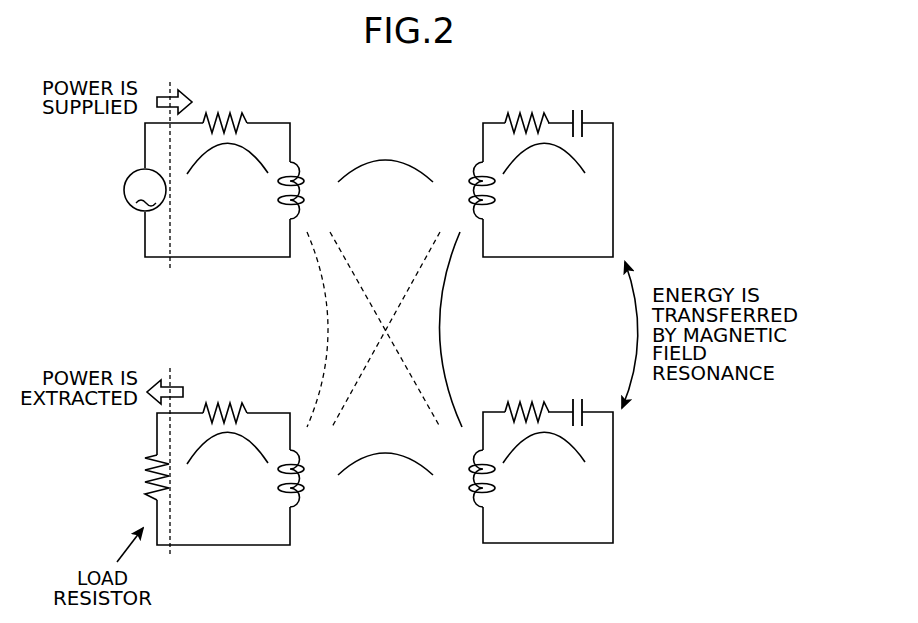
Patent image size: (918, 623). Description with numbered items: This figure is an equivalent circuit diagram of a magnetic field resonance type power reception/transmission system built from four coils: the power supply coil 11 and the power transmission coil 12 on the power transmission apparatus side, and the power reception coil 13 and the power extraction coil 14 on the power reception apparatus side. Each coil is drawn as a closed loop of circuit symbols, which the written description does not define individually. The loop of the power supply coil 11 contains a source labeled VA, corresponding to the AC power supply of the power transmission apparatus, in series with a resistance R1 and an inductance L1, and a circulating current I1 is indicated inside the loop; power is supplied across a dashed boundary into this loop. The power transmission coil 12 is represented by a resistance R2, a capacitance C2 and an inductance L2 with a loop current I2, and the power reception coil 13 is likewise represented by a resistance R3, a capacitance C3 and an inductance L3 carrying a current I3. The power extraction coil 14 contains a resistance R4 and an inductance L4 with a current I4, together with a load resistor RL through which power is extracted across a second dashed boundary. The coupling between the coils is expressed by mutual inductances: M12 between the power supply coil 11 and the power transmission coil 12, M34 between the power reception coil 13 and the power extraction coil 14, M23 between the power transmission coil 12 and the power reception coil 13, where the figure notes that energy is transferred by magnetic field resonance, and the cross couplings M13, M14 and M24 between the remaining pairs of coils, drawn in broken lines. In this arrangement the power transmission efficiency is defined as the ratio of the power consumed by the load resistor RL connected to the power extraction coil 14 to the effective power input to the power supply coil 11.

The power supply coil 11 is at (203, 182).
The power transmission coil 12 is at (541, 182).
The power reception coil 13 is at (541, 472).
The power extraction coil 14 is at (212, 472).
The AC voltage source VA is at (134, 177).
The resistance of coil 11 R1 is at (225, 105).
The inductance of coil 11 L1 is at (278, 190).
The current in coil 11 I1 is at (227, 165).
The resistance of coil 12 R2 is at (527, 105).
The capacitance of coil 12 C2 is at (583, 107).
The inductance of coil 12 L2 is at (495, 190).
The current in coil 12 I2 is at (544, 165).
The resistance of coil 13 R3 is at (527, 395).
The capacitance of coil 13 C3 is at (583, 397).
The inductance of coil 13 L3 is at (495, 478).
The current in coil 13 I3 is at (544, 455).
The resistance of coil 14 R4 is at (225, 395).
The inductance of coil 14 L4 is at (278, 478).
The current in coil 14 I4 is at (227, 455).
The load resistor RL is at (144, 477).
The mutual inductance between coils 11 and 12 M12 is at (385, 157).
The mutual inductance between coils 11 and 13 M13 is at (385, 325).
The mutual inductance between coils 11 and 14 M14 is at (308, 329).
The mutual inductance between coils 12 and 13 M23 is at (469, 329).
The mutual inductance between coils 12 and 14 M24 is at (386, 325).
The mutual inductance between coils 13 and 14 M34 is at (385, 450).